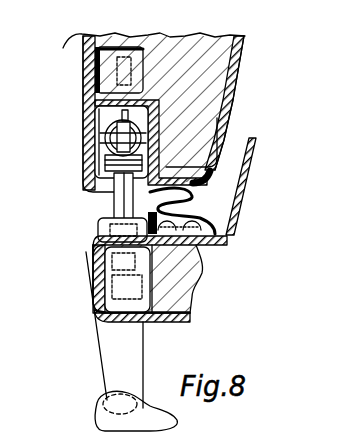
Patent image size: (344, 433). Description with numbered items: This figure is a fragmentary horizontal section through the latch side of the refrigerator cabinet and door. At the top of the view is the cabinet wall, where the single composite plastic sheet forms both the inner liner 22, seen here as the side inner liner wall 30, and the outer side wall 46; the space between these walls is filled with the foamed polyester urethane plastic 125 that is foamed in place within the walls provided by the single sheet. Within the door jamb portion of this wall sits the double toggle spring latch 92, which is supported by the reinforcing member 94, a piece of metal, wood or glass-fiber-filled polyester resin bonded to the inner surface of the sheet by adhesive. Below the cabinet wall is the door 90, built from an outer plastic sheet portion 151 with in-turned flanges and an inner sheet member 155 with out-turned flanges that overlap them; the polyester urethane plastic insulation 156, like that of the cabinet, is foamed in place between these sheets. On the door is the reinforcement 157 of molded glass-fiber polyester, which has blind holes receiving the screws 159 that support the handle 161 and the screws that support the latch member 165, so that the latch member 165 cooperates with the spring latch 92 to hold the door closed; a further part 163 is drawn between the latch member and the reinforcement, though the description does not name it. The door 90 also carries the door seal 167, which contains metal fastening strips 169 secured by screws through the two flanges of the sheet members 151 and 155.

The inner liner 22 is at (283, 67).
The side inner liner wall 30 is at (238, 40).
The outer side wall 46 is at (66, 46).
The door 90 is at (178, 359).
The double toggle spring latch 92 is at (93, 151).
The reinforcing member 94 is at (160, 107).
The foamed polyester urethane plastic 125 is at (188, 57).
The outer plastic sheet portion 151 is at (192, 318).
The inner sheet member 155 is at (254, 147).
The polyester urethane plastic insulation 156 is at (205, 283).
The reinforcement 157 is at (153, 290).
The screws 159 is at (86, 287).
The handle 161 is at (110, 378).
The plunger cap 163 is at (107, 221).
The latch member 165 is at (118, 203).
The door seal 167 is at (204, 205).
The metal fastening strips 169 is at (200, 250).